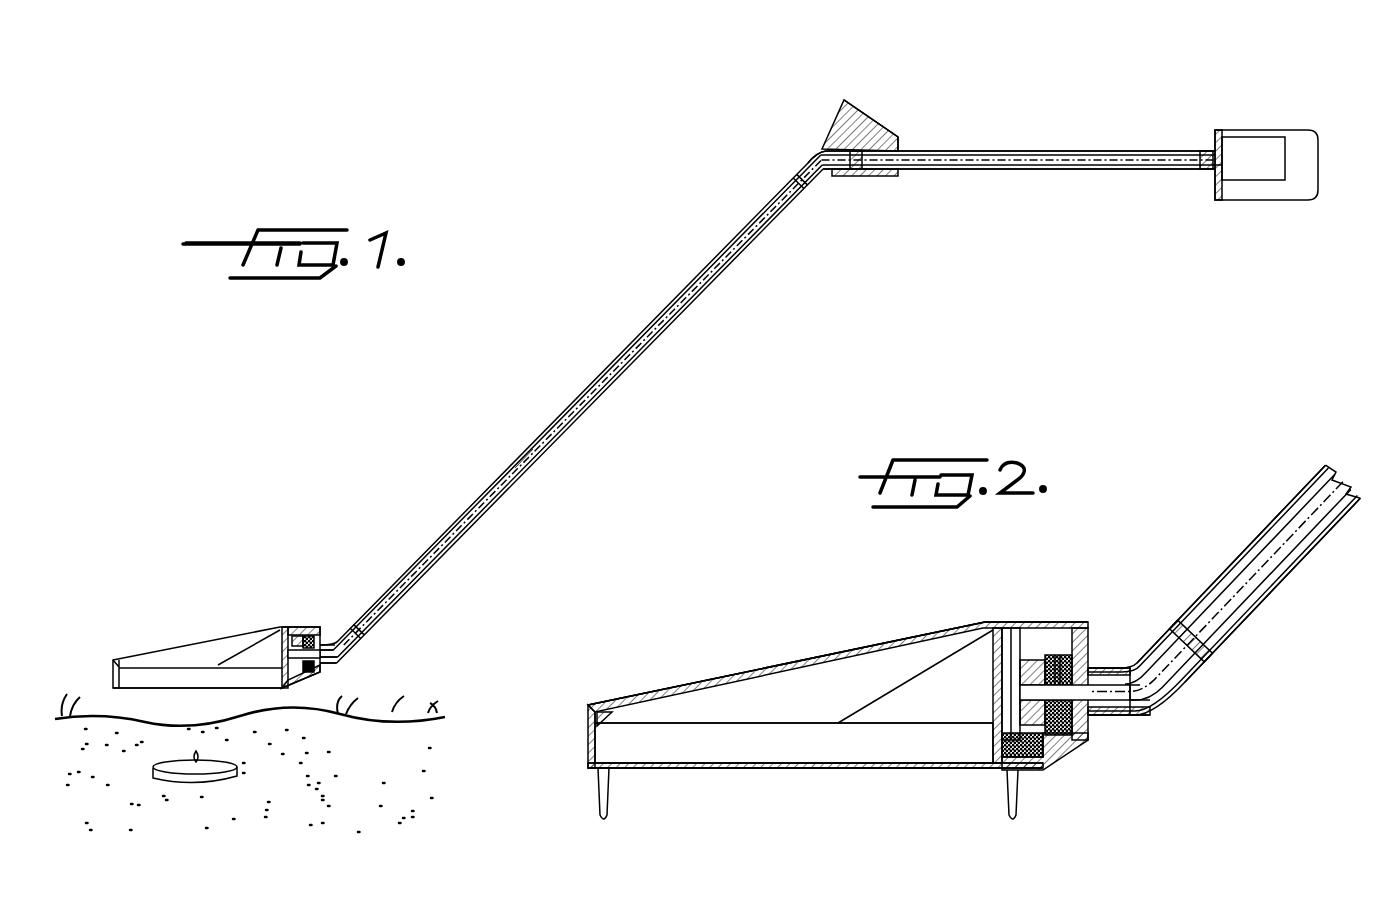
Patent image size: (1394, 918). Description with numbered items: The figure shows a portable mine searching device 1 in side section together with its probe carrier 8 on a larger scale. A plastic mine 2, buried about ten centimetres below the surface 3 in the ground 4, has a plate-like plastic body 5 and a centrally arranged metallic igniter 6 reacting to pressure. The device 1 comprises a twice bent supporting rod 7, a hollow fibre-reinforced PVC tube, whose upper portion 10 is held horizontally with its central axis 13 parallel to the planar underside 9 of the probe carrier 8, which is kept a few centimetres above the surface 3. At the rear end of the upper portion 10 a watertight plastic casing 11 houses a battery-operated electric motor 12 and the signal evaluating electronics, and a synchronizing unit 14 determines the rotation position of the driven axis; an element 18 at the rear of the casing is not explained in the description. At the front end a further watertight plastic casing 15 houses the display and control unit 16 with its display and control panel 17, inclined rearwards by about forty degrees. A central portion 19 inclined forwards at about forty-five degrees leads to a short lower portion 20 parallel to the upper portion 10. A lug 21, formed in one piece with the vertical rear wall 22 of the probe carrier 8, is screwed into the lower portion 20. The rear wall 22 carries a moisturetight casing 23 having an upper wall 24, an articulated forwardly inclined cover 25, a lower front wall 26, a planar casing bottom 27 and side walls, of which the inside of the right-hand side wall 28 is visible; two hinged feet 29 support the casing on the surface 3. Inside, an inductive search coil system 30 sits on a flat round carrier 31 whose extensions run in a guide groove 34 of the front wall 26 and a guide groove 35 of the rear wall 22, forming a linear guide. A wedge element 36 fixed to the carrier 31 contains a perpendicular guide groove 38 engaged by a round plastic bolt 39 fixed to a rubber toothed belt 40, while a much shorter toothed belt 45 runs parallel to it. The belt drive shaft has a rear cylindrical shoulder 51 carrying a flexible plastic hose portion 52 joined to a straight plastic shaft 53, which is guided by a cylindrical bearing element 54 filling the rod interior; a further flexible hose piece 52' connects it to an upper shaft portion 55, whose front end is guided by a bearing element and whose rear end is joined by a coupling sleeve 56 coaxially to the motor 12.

In FIG. 1, the portable mine searching device 1 is at (617, 228).
In FIG. 1, the plastic mine 2 is at (257, 778).
In FIG. 1, the ground surface 3 is at (376, 712).
In FIG. 1, the ground 4 is at (422, 814).
In FIG. 1, the plate-like body 5 is at (162, 779).
In FIG. 1, the metallic igniter 6 is at (195, 776).
In FIG. 1, the supporting rod 7 is at (1012, 150).
In FIG. 2, the supporting rod 7 is at (1296, 466).
In FIG. 1, the probe carrier 8 is at (219, 548).
In FIG. 2, the probe carrier 8 is at (749, 590).
In FIG. 1, the underside 9 is at (276, 690).
In FIG. 2, the underside 9 is at (717, 777).
In FIG. 1, the upper portion 10 is at (1088, 145).
In FIG. 1, the plastic casing 11 is at (1266, 200).
In FIG. 1, the electric motor 12 is at (1248, 140).
In FIG. 1, the central axis 13 is at (1065, 168).
In FIG. 1, the synchronizing unit 14 is at (1210, 175).
In FIG. 1, the plastic casing 15 is at (826, 120).
In FIG. 1, the display and control unit 16 is at (850, 88).
In FIG. 1, the display and control panel 17 is at (884, 108).
In FIG. 1, the end cap 18 is at (1300, 184).
In FIG. 1, the central portion 19 is at (627, 345).
In FIG. 2, the central portion 19 is at (1259, 533).
In FIG. 1, the lower portion 20 is at (334, 642).
In FIG. 2, the lower portion 20 is at (1138, 698).
In FIG. 2, the lug 21 is at (1117, 716).
In FIG. 2, the rear wall 22 is at (1088, 724).
In FIG. 1, the casing 23 is at (136, 658).
In FIG. 2, the casing 23 is at (695, 660).
In FIG. 2, the upper wall 24 is at (992, 630).
In FIG. 2, the cover 25 is at (829, 653).
In FIG. 2, the front wall 26 is at (590, 716).
In FIG. 2, the casing bottom 27 is at (776, 766).
In FIG. 2, the side wall 28 is at (799, 712).
In FIG. 2, the hinged feet 29 is at (599, 796).
In FIG. 1, the search coil system 30 is at (218, 663).
In FIG. 2, the search coil system 30 is at (907, 748).
In FIG. 1, the carrier 31 is at (196, 675).
In FIG. 2, the carrier 31 is at (862, 752).
In FIG. 2, the guide groove 34 is at (600, 743).
In FIG. 2, the guide groove 35 is at (995, 752).
In FIG. 2, the wedge element 36 is at (946, 720).
In FIG. 2, the guide groove 38 is at (1008, 640).
In FIG. 2, the plastic bolt 39 is at (1043, 745).
In FIG. 2, the toothed belt 40 is at (1034, 648).
In FIG. 2, the toothed belt 45 is at (1074, 634).
In FIG. 2, the cylindrical shoulder 51 is at (1118, 672).
In FIG. 2, the flexible plastic hose portion 52 is at (1139, 739).
In FIG. 1, the flexible plastic hose piece 52' is at (770, 141).
In FIG. 1, the shaft 53 is at (509, 468).
In FIG. 2, the shaft 53 is at (1258, 570).
In FIG. 1, the bearing element 54 is at (792, 181).
In FIG. 2, the bearing element 54 is at (1202, 645).
In FIG. 1, the upper shaft portion 55 is at (955, 165).
In FIG. 1, the coupling sleeve 56 is at (1205, 148).